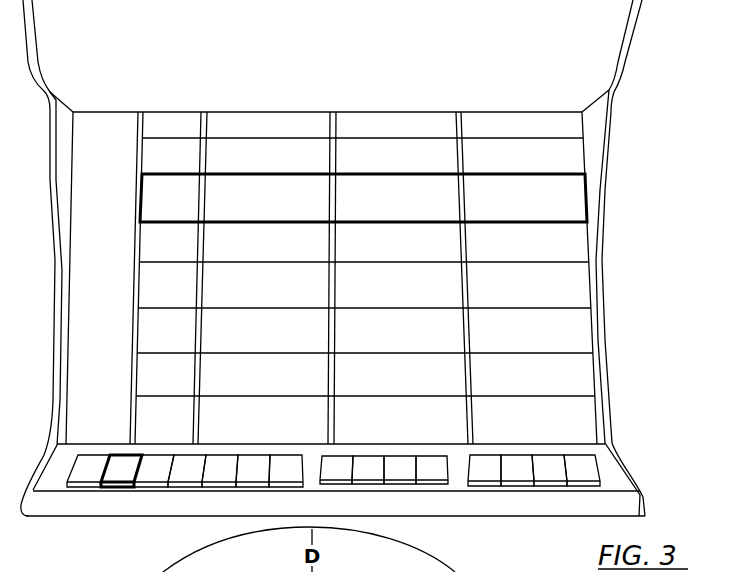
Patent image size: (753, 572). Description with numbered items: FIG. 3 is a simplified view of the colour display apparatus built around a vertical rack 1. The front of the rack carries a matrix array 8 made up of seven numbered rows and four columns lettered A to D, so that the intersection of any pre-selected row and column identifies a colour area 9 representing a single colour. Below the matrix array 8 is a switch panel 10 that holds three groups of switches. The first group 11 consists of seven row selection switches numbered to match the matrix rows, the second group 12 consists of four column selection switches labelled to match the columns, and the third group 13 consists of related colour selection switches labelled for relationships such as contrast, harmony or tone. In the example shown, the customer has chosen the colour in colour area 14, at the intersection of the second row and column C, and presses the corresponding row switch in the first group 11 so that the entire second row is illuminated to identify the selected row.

The vertical rack 1 is at (600, 281).
The matrix array 8 is at (573, 358).
The colour area 9 is at (533, 280).
The switch panel 10 is at (617, 472).
The first group of switches 11 is at (173, 488).
The second group of switches 12 is at (408, 488).
The third group of switches 13 is at (553, 487).
The colour area 14 is at (363, 198).